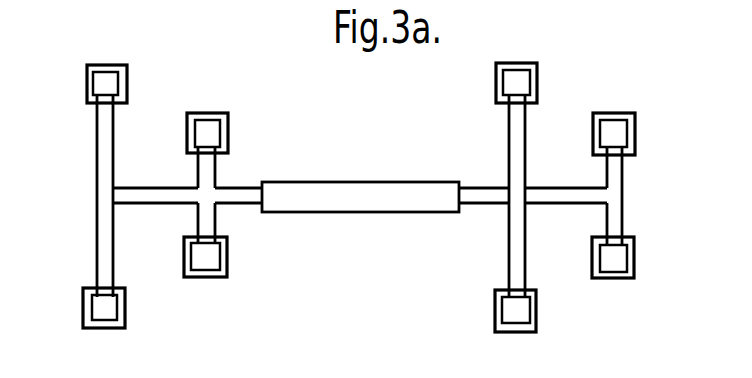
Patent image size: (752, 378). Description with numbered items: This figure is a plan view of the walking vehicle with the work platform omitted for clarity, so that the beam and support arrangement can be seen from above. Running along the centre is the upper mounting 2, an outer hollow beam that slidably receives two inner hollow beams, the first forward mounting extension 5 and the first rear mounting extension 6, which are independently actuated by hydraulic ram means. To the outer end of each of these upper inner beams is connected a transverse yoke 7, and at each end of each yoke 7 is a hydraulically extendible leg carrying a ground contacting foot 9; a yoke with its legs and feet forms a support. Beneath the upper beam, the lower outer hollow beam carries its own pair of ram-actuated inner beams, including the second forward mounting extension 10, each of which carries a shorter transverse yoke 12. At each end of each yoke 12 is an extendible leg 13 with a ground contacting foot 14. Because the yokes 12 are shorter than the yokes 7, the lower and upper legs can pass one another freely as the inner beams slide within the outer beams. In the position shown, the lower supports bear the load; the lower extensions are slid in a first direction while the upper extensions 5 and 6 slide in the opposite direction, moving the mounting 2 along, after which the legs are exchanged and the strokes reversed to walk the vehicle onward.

The upper mounting 2 is at (393, 195).
The first forward mounting extension 5 is at (108, 82).
The first rear mounting extension 6 is at (137, 193).
The transverse yoke 7 is at (107, 138).
The ground contacting foot 9 is at (87, 65).
The second forward mounting extension 10 is at (585, 199).
The transverse yoke 12 is at (207, 168).
The extendible leg 13 is at (205, 258).
The ground contacting foot 14 is at (227, 282).